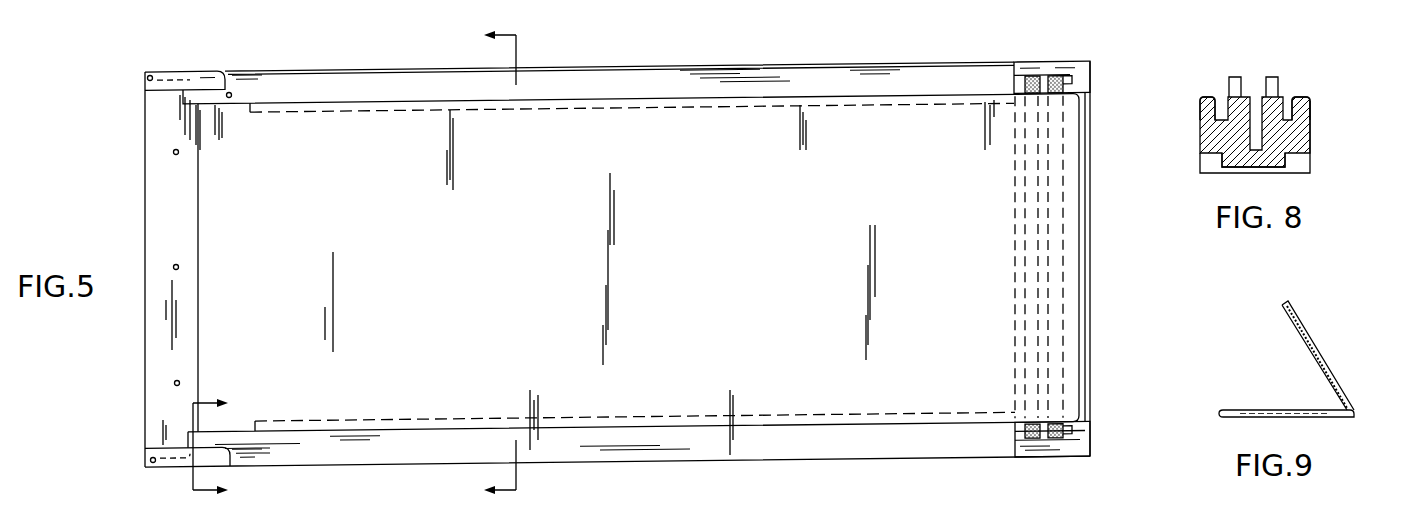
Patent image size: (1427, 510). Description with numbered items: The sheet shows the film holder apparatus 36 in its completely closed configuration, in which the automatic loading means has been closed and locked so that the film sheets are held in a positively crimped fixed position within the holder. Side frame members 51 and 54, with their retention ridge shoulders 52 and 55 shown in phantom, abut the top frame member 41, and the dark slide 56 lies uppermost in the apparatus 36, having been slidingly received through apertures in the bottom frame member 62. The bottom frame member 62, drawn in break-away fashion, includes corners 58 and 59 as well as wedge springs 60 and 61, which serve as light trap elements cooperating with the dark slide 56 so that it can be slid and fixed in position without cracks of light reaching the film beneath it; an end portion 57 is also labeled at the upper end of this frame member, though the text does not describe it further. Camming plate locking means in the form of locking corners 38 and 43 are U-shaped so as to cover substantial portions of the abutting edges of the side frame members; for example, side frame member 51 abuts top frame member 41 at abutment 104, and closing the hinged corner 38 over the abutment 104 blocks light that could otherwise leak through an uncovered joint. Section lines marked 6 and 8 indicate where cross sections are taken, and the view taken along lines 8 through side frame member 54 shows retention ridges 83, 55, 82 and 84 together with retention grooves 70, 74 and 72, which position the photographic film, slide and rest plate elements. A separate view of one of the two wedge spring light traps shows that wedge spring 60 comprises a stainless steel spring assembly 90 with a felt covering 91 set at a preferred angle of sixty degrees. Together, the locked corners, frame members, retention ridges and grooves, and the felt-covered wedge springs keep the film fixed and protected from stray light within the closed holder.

In FIG. 5, the film holder apparatus 36 is at (712, 62).
In FIG. 5, the locking corner 38 is at (212, 80).
In FIG. 5, the top frame member 41 is at (163, 325).
In FIG. 5, the locking corner 43 is at (255, 452).
In FIG. 5, the side frame member 51 is at (876, 80).
In FIG. 5, the retention ridge shoulder 52 is at (572, 105).
In FIG. 5, the side frame member 54 is at (908, 445).
In FIG. 8, the side frame member 54 is at (1322, 117).
In FIG. 5, the retention ridge shoulder 55 is at (340, 420).
In FIG. 8, the retention ridge shoulder 55 is at (1275, 77).
In FIG. 5, the dark slide 56 is at (728, 398).
In FIG. 5, the end cap 57 is at (1053, 60).
In FIG. 5, the corner 58 is at (1078, 70).
In FIG. 5, the corner 59 is at (1082, 445).
In FIG. 5, the wedge spring 60 is at (1085, 430).
In FIG. 9, the wedge spring 60 is at (1316, 357).
In FIG. 5, the wedge spring 61 is at (1030, 438).
In FIG. 5, the bottom frame member 62 is at (1085, 112).
In FIG. 5, the retention groove 70 is at (71, 507).
In FIG. 8, the retention groove 70 is at (1310, 132).
In FIG. 8, the retention groove 72 is at (1222, 125).
In FIG. 8, the retention groove 74 is at (1262, 163).
In FIG. 8, the retention ridge 82 is at (1235, 77).
In FIG. 5, the retention ridge 83 is at (1173, 509).
In FIG. 8, the retention ridge 83 is at (1308, 98).
In FIG. 8, the retention ridge 84 is at (1208, 97).
In FIG. 9, the stainless steel spring assembly 90 is at (1312, 416).
In FIG. 9, the felt covering 91 is at (1318, 348).
In FIG. 5, the abutment 104 is at (189, 72).
In FIG. 5, the section line 6- 6 is at (519, 263).
In FIG. 5, the section line 8 is at (189, 447).